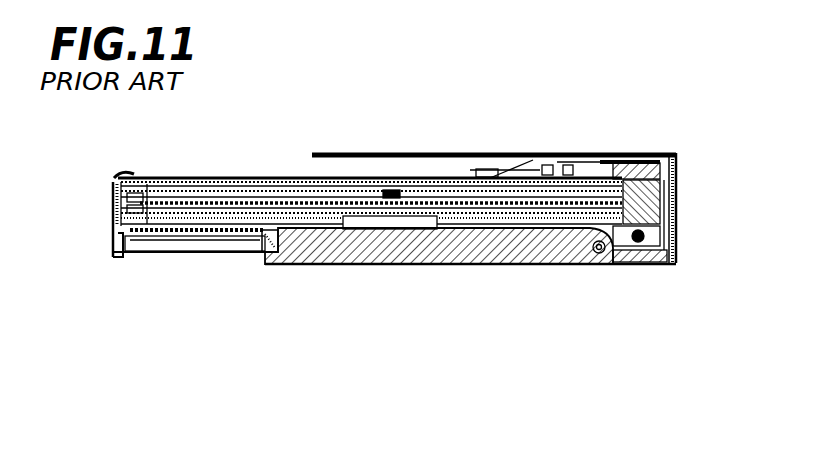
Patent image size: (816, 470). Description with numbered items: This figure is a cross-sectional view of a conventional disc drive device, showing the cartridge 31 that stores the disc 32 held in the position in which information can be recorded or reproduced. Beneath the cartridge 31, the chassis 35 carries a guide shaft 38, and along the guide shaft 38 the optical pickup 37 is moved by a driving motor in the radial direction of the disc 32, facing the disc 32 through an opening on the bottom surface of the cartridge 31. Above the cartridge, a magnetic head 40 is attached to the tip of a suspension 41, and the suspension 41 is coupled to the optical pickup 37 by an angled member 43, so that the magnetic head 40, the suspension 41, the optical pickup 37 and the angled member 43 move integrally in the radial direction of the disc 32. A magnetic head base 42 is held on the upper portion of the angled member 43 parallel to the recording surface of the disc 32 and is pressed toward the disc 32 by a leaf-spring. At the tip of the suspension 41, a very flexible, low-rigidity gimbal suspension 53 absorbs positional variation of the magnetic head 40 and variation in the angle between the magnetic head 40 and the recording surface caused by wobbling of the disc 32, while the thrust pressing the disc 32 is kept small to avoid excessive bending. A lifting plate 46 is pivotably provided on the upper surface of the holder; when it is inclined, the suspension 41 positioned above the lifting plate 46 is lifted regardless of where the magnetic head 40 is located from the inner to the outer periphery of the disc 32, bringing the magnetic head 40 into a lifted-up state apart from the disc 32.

The cartridge 31 is at (113, 193).
The disc 32 is at (172, 180).
The gimbal suspension 53 is at (328, 178).
The magnetic head 40 is at (355, 178).
The suspension 41 is at (475, 172).
The lifting plate 46 is at (498, 170).
The magnetic head base 42 is at (533, 156).
The angled member 43 is at (678, 198).
The chassis 35 is at (170, 237).
The optical pickup 37 is at (423, 253).
The guide shaft 38 is at (267, 253).